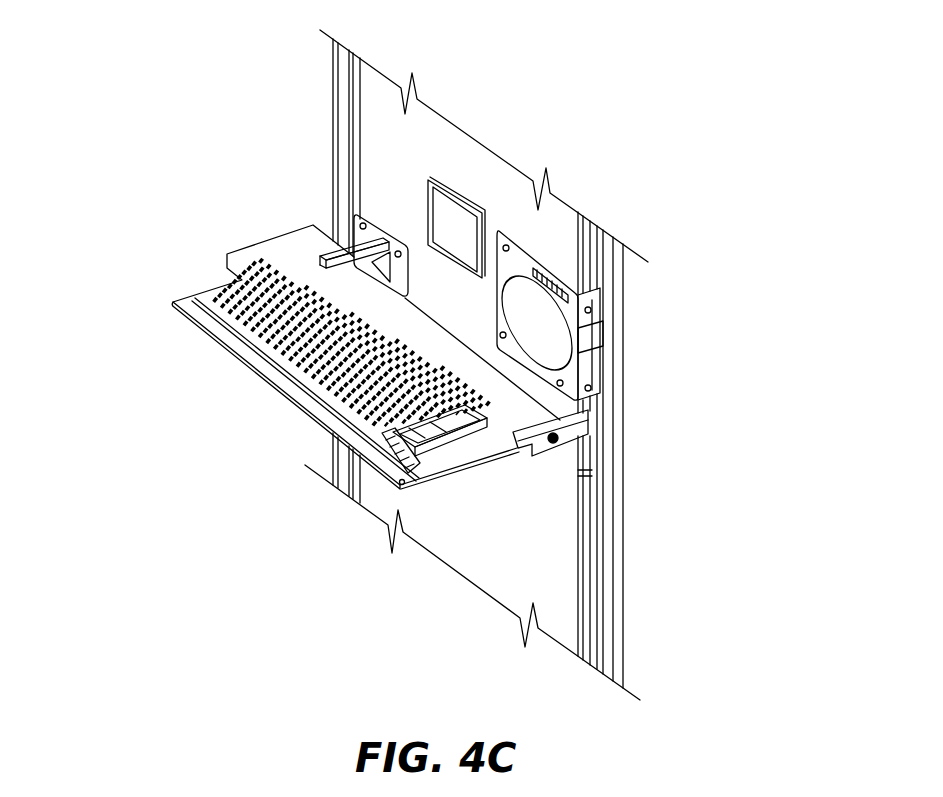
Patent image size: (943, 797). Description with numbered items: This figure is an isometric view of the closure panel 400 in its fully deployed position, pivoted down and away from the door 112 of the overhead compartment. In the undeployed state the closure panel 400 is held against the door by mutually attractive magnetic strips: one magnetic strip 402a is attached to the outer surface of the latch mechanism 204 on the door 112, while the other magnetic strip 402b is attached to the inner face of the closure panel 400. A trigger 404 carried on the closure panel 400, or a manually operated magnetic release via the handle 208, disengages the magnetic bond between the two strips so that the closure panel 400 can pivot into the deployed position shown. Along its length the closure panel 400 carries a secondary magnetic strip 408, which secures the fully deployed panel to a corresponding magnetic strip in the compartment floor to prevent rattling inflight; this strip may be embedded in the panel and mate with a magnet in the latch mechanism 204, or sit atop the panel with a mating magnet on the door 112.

The closure panel 400 is at (103, 61).
The door 112 is at (368, 135).
The magnetic strip 402a is at (536, 262).
The latch mechanism 204 is at (557, 261).
The secondary magnetic strip 408 is at (247, 343).
The handle 208 is at (440, 430).
The magnetic strip 402b is at (404, 456).
The trigger 404 is at (578, 430).